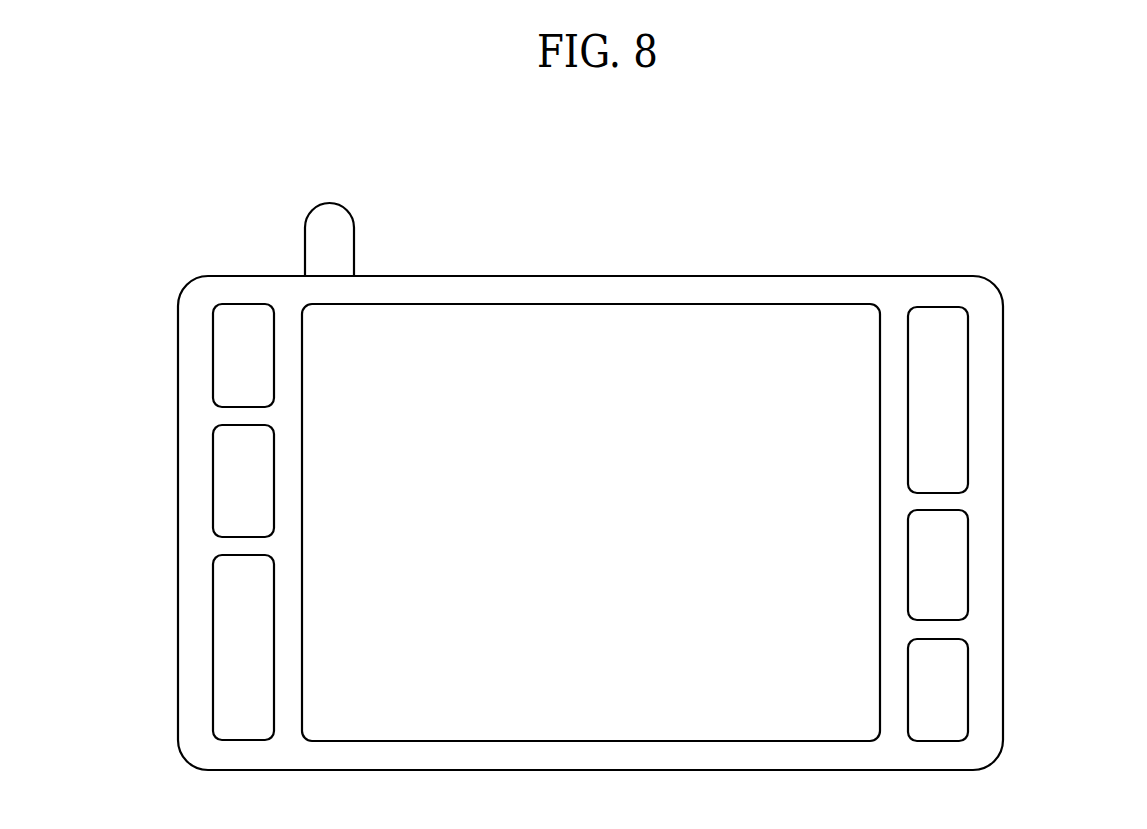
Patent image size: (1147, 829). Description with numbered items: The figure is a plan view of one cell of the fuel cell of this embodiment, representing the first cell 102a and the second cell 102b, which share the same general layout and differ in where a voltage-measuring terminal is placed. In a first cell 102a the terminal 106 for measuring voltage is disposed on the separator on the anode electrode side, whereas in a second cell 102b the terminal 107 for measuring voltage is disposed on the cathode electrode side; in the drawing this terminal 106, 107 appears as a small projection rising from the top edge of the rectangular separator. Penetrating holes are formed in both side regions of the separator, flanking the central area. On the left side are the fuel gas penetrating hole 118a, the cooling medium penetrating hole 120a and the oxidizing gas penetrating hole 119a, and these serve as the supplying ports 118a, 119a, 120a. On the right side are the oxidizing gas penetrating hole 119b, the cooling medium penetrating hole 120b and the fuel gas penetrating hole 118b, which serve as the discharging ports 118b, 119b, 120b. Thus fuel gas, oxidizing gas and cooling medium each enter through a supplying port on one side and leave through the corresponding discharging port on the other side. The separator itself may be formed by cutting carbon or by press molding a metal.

The first cell 102a is at (641, 450).
The second cell 102b is at (908, 261).
The terminal for measuring voltage 106 is at (384, 206).
The terminal for measuring voltage 107 is at (335, 205).
The fuel gas penetrating hole 118a is at (213, 334).
The fuel gas penetrating hole 118b is at (968, 672).
The oxidizing gas penetrating hole 119a is at (213, 687).
The oxidizing gas penetrating hole 119b is at (968, 412).
The cooling medium penetrating hole 120a is at (213, 470).
The cooling medium penetrating hole 120b is at (968, 557).